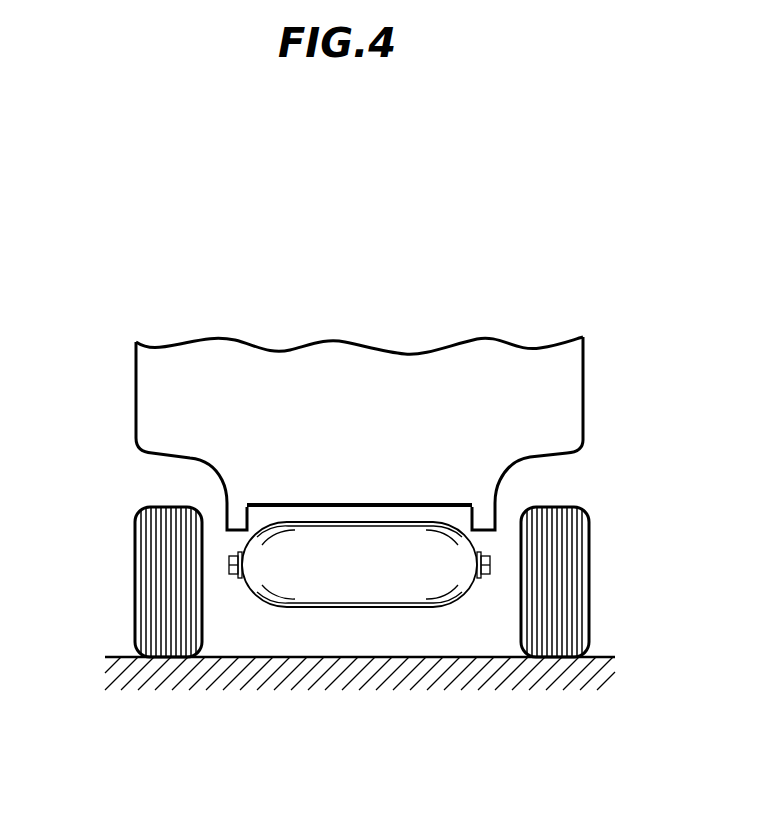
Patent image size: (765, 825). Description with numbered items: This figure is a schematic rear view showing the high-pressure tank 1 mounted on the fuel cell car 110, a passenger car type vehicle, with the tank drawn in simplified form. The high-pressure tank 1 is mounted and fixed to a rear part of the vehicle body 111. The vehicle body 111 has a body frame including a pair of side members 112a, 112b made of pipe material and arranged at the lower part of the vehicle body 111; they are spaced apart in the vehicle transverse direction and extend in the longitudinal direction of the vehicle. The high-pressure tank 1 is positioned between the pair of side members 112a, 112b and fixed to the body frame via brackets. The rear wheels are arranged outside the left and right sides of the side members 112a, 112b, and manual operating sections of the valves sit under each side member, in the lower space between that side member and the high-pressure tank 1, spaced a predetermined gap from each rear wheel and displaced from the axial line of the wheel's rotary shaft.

The high-pressure tank 1 is at (375, 595).
The fuel cell car 110 is at (401, 371).
The vehicle body 111 is at (572, 386).
The side member 112a is at (238, 511).
The side member 112b is at (485, 511).